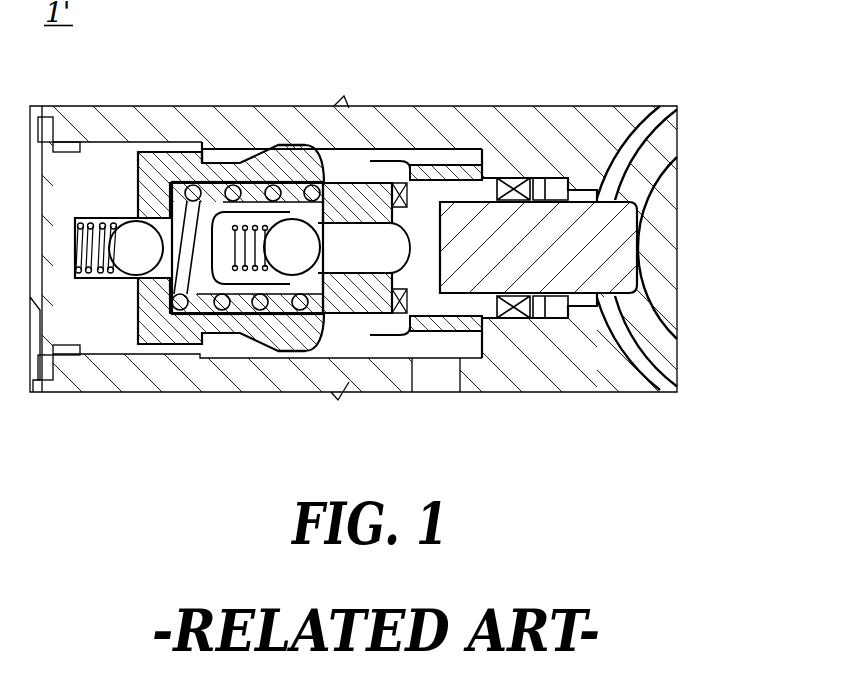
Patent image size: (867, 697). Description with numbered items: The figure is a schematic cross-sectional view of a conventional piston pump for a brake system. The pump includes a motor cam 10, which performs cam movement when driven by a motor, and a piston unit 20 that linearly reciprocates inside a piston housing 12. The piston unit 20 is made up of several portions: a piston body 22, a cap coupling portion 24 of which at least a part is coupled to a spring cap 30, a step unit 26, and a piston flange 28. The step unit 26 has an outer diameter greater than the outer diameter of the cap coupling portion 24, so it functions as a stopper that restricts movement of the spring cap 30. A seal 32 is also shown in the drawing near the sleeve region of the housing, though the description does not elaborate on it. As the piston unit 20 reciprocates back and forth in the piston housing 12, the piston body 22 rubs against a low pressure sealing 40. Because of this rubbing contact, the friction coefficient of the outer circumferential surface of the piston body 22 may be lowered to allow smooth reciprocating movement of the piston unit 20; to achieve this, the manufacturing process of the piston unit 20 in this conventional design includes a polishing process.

The motor cam 10 is at (677, 203).
The piston housing 12 is at (118, 107).
The piston unit 20 is at (625, 295).
The piston body 22 is at (587, 200).
The cap coupling portion 24 is at (357, 210).
The step unit 26 is at (338, 300).
The piston flange 28 is at (380, 313).
The spring cap 30 is at (240, 298).
The seal ring 32 is at (296, 146).
The low pressure sealing 40 is at (338, 192).